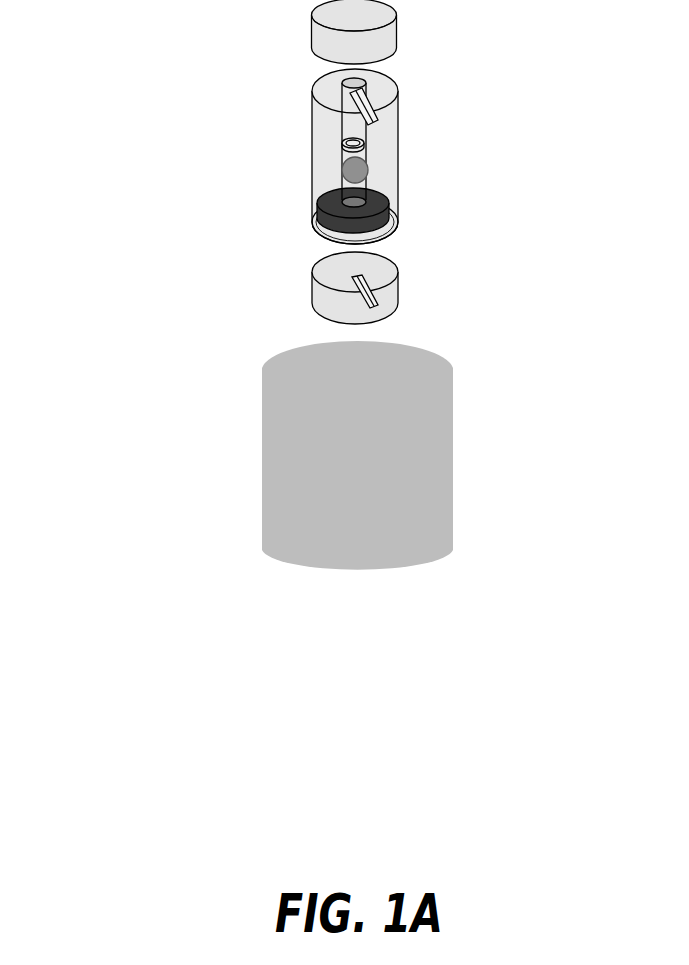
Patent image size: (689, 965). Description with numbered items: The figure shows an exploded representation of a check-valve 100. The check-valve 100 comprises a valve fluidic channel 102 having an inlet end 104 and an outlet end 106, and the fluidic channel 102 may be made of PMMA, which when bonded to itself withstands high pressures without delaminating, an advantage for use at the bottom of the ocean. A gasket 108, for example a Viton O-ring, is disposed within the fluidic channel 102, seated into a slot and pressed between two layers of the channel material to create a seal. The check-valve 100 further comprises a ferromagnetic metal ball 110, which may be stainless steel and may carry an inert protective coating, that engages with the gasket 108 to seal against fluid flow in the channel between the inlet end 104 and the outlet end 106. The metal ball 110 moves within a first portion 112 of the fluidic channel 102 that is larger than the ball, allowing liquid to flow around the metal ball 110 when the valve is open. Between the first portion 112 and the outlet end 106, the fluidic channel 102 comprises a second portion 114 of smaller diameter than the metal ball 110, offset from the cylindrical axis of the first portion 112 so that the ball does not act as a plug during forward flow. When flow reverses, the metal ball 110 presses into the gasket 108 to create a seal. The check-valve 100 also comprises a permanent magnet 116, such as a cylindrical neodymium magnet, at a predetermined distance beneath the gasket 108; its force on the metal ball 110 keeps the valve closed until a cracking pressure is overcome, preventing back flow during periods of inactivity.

The check-valve 100 is at (133, 72).
The valve fluidic channel 102 is at (328, 148).
The inlet end 104 is at (393, 240).
The outlet end 106 is at (385, 78).
The gasket 108 is at (397, 210).
The ferromagnetic metal ball 110 is at (362, 165).
The first portion 112 is at (367, 143).
The second portion 114 is at (350, 122).
The permanent magnet 116 is at (283, 447).